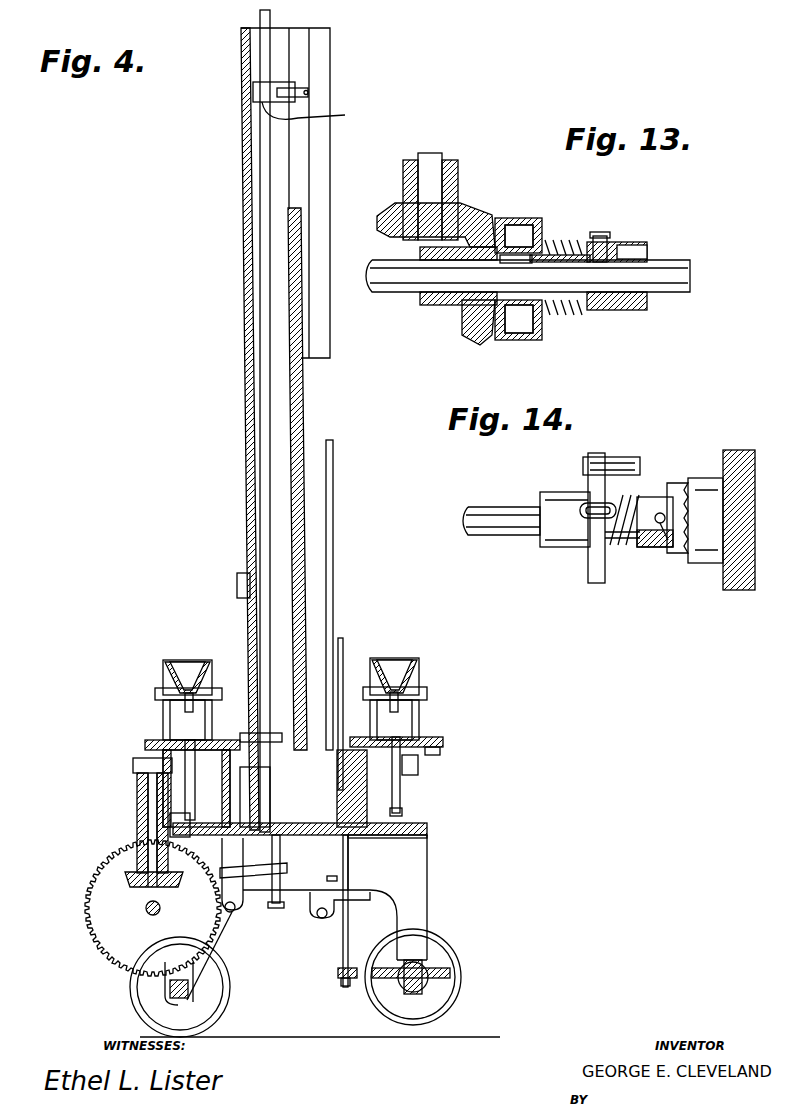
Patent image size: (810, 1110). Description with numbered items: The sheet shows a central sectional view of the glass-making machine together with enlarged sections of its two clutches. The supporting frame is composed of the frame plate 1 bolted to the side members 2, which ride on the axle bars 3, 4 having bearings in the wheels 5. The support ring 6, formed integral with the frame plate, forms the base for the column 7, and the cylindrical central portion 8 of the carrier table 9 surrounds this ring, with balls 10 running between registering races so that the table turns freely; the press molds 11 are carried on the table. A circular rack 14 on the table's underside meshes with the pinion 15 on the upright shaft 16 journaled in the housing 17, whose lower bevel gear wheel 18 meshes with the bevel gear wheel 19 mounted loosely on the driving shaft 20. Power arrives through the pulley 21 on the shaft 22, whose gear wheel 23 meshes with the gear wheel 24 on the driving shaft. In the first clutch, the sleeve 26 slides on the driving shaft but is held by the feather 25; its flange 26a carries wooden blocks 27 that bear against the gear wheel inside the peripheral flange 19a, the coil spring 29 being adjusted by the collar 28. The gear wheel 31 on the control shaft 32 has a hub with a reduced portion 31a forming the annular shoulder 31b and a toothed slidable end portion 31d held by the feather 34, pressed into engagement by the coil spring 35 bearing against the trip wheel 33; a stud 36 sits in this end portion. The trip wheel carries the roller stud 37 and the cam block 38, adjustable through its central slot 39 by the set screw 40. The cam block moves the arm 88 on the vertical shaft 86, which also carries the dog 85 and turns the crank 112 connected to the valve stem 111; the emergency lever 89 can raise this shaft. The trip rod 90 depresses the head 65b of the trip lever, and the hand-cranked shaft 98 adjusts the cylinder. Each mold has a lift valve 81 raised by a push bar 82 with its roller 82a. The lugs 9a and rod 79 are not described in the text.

In FIG. 4, the frame plate 1 is at (430, 828).
In FIG. 4, the side members 2 is at (426, 912).
In FIG. 4, the axle bar 3 is at (180, 1000).
In FIG. 4, the axle bar 4 is at (418, 990).
In FIG. 4, the wheels 5 is at (455, 1008).
In FIG. 4, the support ring 6 is at (255, 797).
In FIG. 4, the column 7 is at (246, 300).
In FIG. 4, the cylindrical central portion 8 is at (366, 795).
In FIG. 4, the carrier table 9 is at (440, 738).
In FIG. 4, the plate lug 9a is at (442, 752).
In FIG. 4, the balls 10 is at (362, 838).
In FIG. 4, the press molds 11 is at (212, 662).
In FIG. 4, the circular rack 14 is at (402, 790).
In FIG. 4, the pinion 15 is at (133, 765).
In FIG. 4, the upright shaft 16 is at (148, 798).
In FIG. 13, the upright shaft 16 is at (416, 180).
In FIG. 4, the housing 17 is at (137, 808).
In FIG. 13, the housing 17 is at (455, 178).
In FIG. 4, the bevel gear wheel 18 is at (128, 882).
In FIG. 13, the bevel gear wheel 18 is at (468, 214).
In FIG. 13, the bevel gear wheel 19 is at (432, 305).
In FIG. 13, the peripheral flange 19a is at (503, 215).
In FIG. 4, the driving shaft 20 is at (151, 914).
In FIG. 13, the driving shaft 20 is at (528, 276).
In FIG. 4, the pulley 21 is at (240, 940).
In FIG. 4, the shaft 22 is at (242, 920).
In FIG. 4, the gear wheel 23 is at (234, 919).
In FIG. 4, the gear wheel 24 is at (100, 926).
In FIG. 13, the feather 25 is at (565, 300).
In FIG. 13, the sleeve 26 is at (520, 340).
In FIG. 13, the flange 26a is at (548, 252).
In FIG. 13, the wooden blocks 27 is at (528, 220).
In FIG. 13, the adjustable collar 28 is at (604, 310).
In FIG. 13, the coil spring 29 is at (600, 233).
In FIG. 14, the gear wheel 31 is at (755, 500).
In FIG. 14, the reduced portion of hub 31a is at (682, 483).
In FIG. 14, the annular shoulder 31b is at (698, 480).
In FIG. 14, the end portion of hub 31d is at (634, 548).
In FIG. 14, the control shaft 32 is at (501, 521).
In FIG. 14, the trip wheel 33 is at (588, 570).
In FIG. 14, the feather 34 is at (655, 548).
In FIG. 14, the coil spring 35 is at (620, 545).
In FIG. 14, the stud 36 is at (658, 512).
In FIG. 14, the roller stud 37 is at (612, 463).
In FIG. 14, the cam block 38 is at (560, 520).
In FIG. 14, the central slot 39 is at (585, 520).
In FIG. 14, the set screw 40 is at (585, 505).
In FIG. 4, the head of trip lever 65b is at (316, 877).
In FIG. 4, the rod 79 is at (345, 652).
In FIG. 4, the lift valve 81 is at (476, 672).
In FIG. 4, the push bar 82 is at (196, 784).
In FIG. 4, the roller 82a is at (402, 814).
In FIG. 4, the dog 85 is at (255, 735).
In FIG. 4, the vertical shaft 86 is at (270, 537).
In FIG. 4, the arm 88 is at (287, 867).
In FIG. 4, the emergency lever 89 is at (283, 912).
In FIG. 4, the trip rod 90 is at (333, 485).
In FIG. 4, the shaft 98 is at (322, 920).
In FIG. 4, the stem 111 is at (300, 90).
In FIG. 4, the crank 112 is at (319, 112).